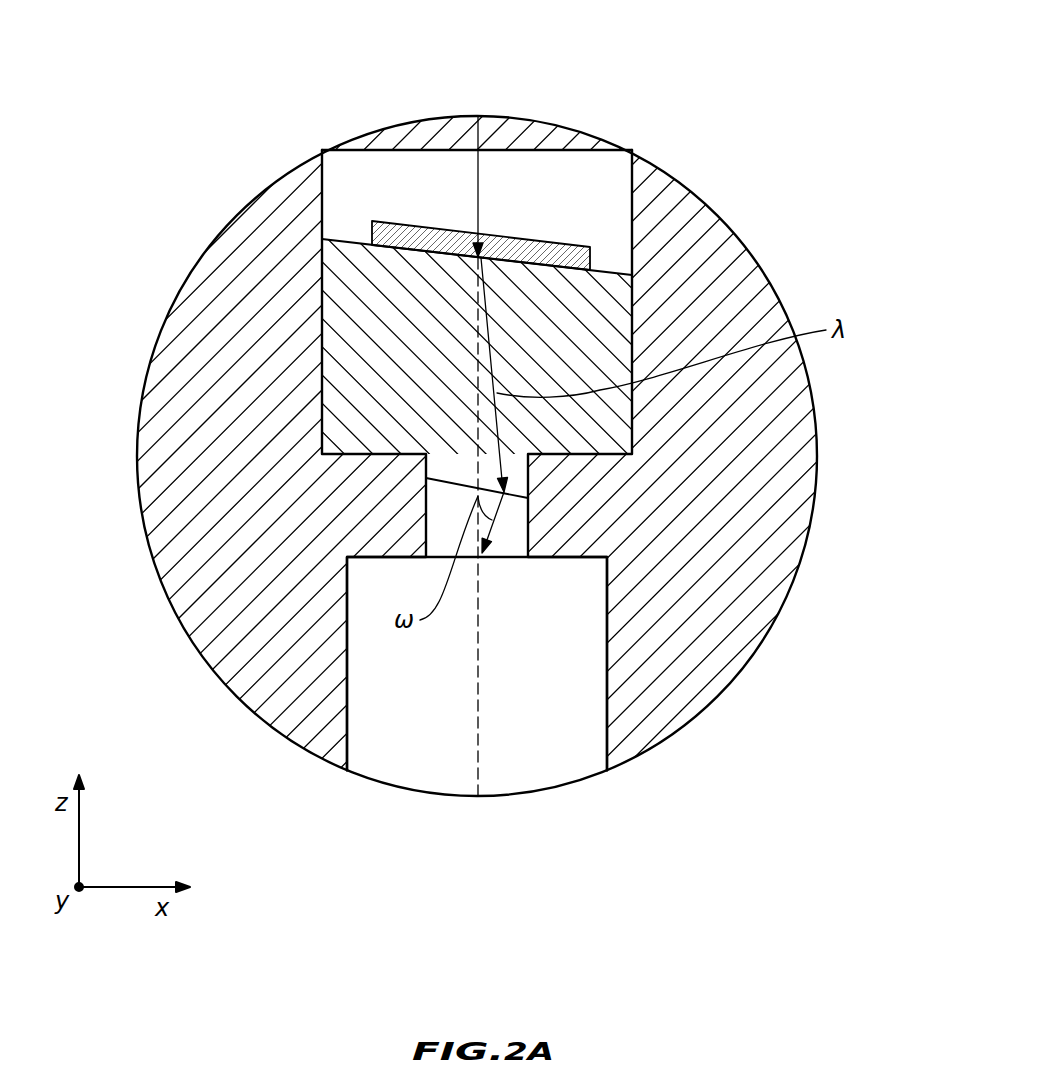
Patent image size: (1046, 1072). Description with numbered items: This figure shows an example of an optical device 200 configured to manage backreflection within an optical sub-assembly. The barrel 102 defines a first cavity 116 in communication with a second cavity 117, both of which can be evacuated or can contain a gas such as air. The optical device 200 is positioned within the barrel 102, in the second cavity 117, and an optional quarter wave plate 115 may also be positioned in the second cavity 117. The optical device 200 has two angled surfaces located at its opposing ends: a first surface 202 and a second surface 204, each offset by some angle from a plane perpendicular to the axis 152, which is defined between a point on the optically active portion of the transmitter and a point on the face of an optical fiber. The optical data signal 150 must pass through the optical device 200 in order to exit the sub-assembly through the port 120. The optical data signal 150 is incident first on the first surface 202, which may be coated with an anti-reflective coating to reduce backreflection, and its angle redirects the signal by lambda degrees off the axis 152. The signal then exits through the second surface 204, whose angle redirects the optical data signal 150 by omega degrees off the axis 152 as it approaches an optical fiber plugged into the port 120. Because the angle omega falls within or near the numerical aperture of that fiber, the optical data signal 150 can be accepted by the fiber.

The barrel 102 is at (158, 460).
The quarter wave plate 115 is at (368, 238).
The first cavity 116 is at (528, 135).
The second cavity 117 is at (587, 150).
The port 120 is at (445, 768).
The optical data signal 150 is at (480, 137).
The axis 152 is at (476, 403).
The optical device 200 is at (604, 330).
The first surface 202 is at (523, 257).
The second surface 204 is at (460, 490).